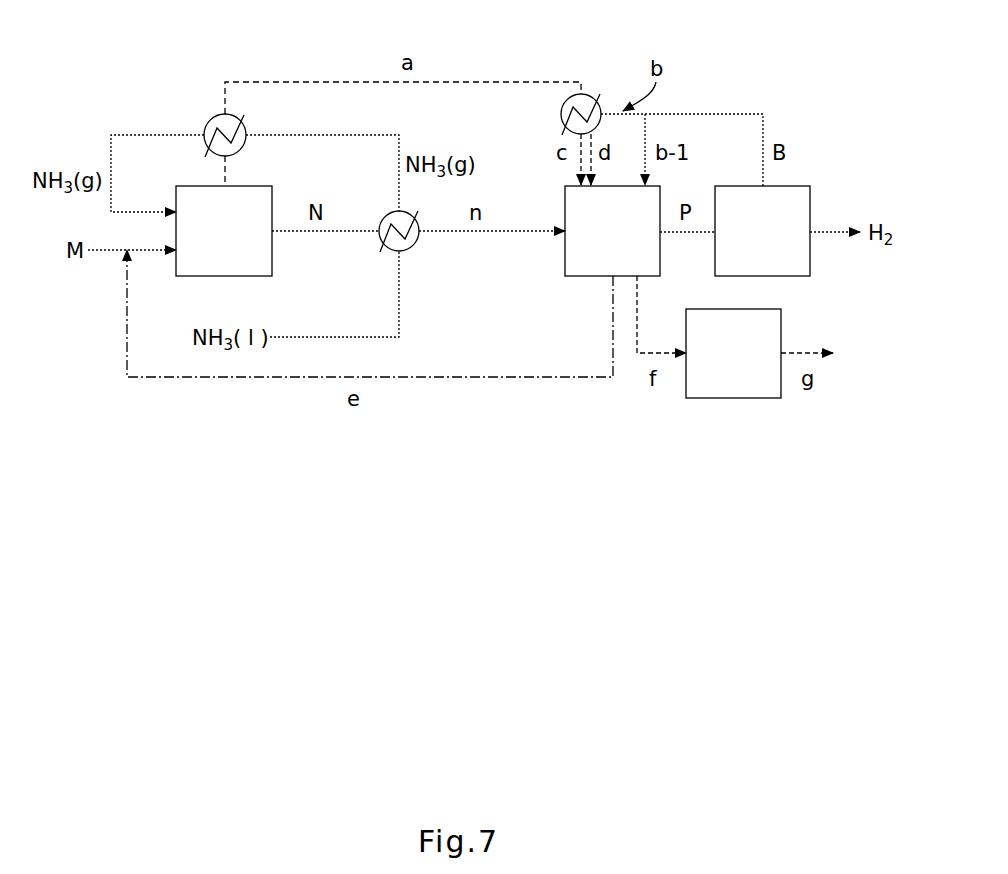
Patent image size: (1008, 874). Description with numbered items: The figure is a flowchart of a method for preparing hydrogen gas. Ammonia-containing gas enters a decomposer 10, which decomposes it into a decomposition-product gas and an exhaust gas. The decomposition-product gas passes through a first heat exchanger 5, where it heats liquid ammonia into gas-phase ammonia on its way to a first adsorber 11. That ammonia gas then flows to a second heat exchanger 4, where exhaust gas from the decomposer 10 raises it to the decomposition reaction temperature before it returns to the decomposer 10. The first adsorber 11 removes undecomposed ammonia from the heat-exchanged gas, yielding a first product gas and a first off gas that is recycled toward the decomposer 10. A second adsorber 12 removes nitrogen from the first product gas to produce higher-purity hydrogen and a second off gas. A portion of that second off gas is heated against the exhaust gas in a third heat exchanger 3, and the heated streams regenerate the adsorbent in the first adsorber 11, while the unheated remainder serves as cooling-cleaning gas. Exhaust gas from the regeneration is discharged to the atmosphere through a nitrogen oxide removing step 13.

The third heat exchanger 3 is at (588, 97).
The second heat exchanger 4 is at (207, 122).
The first heat exchanger 5 is at (414, 247).
The decomposer 10 is at (224, 231).
The first adsorber 11 is at (612, 231).
The second adsorber 12 is at (762, 231).
The nitrogen oxide removing step 13 is at (733, 353).